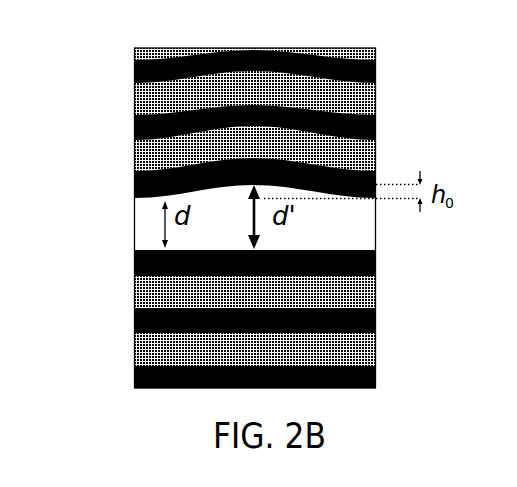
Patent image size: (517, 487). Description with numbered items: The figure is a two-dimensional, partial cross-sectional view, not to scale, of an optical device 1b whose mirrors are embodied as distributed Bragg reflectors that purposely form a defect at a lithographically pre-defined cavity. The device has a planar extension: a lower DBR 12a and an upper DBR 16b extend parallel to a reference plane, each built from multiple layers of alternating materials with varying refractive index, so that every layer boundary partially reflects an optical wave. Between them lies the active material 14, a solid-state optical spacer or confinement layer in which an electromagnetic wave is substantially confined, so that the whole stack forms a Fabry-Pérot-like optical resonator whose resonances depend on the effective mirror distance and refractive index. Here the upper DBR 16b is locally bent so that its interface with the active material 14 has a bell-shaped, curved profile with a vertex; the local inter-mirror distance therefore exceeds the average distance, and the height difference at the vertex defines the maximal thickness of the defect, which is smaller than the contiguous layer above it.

The layered structure 1b is at (76, 373).
The upper distributed Bragg reflector 16b is at (112, 48).
The active material 14 is at (127, 218).
The lower distributed Bragg reflector 12a is at (112, 245).